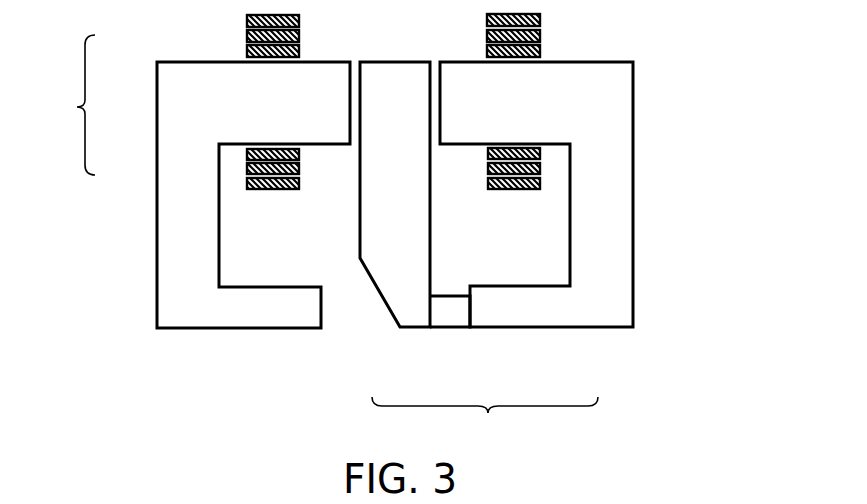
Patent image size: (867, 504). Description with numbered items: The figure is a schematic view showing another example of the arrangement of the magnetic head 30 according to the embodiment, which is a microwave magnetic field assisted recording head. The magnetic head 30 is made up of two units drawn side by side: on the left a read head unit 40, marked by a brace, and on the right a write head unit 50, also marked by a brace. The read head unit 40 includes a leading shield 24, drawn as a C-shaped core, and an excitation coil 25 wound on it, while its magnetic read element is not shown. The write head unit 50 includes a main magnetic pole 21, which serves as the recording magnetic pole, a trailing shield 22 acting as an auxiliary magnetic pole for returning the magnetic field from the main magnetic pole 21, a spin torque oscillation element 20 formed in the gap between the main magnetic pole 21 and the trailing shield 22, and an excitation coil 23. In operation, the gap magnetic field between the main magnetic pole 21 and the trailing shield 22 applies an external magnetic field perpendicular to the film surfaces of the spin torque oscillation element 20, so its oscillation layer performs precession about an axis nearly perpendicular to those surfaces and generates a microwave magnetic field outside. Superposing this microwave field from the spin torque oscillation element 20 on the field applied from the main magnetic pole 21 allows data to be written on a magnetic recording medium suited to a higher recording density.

The spin torque oscillation element 20 is at (448, 331).
The main magnetic pole 21 is at (397, 289).
The trailing shield 22 is at (515, 318).
The excitation coil 23 is at (522, 191).
The leading shield 24 is at (170, 160).
The excitation coil 25 is at (247, 42).
The magnetic head 30 is at (685, 64).
The read head unit 40 is at (72, 105).
The write head unit 50 is at (485, 419).